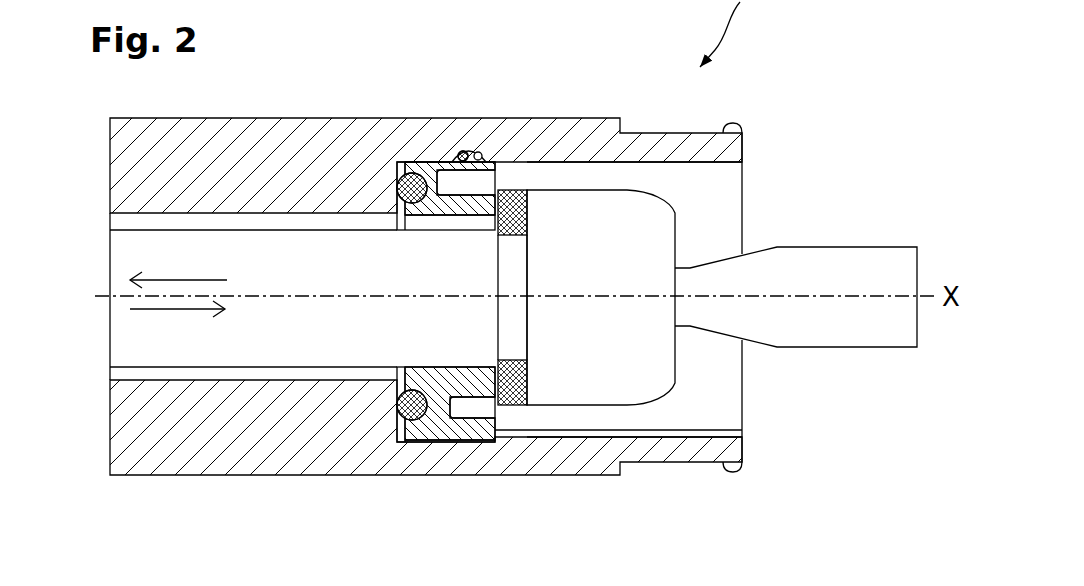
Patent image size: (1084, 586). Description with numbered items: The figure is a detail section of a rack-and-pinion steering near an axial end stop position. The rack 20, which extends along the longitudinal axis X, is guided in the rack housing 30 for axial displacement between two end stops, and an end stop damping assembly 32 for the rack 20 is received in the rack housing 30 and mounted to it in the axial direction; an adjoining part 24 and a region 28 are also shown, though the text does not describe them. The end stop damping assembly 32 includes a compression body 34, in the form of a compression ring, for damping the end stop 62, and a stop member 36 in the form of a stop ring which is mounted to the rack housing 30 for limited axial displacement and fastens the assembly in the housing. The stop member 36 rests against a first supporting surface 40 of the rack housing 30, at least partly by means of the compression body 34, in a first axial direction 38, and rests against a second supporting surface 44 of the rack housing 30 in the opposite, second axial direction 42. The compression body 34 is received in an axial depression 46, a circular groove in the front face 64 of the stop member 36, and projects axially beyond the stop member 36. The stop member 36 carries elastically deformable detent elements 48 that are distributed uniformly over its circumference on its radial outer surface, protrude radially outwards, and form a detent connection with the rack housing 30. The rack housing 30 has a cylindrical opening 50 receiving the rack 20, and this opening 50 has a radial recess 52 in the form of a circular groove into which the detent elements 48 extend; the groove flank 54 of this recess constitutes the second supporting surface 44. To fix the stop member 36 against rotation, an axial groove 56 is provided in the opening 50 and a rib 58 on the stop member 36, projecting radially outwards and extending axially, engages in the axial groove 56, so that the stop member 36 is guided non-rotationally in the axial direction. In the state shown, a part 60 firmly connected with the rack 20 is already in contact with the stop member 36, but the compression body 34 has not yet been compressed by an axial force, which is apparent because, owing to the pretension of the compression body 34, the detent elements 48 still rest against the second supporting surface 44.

The rack 20 is at (188, 350).
The shaft 24 is at (873, 268).
The upper chamber 28 is at (722, 197).
The rack housing 30 is at (258, 447).
The end stop damping assembly 32 is at (520, 418).
The compression body 34 is at (405, 443).
The stop member 36 is at (468, 423).
The first axial direction 38 is at (163, 280).
The first supporting surface 40 is at (398, 186).
The second axial direction 42 is at (163, 309).
The second supporting surface 44 is at (478, 158).
The axial depression 46 is at (422, 163).
The detent elements 48 is at (488, 152).
The cylindrical opening 50 is at (723, 403).
The radial recess 52 is at (458, 150).
The groove flank 54 is at (478, 158).
The axial groove 56 is at (687, 437).
The rib 58 is at (473, 433).
The part firmly connected with the rack 60 is at (663, 350).
The end stop 62 is at (396, 176).
The front face 64 is at (523, 207).